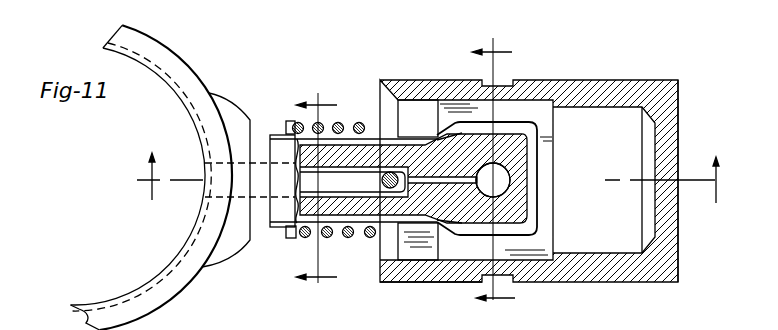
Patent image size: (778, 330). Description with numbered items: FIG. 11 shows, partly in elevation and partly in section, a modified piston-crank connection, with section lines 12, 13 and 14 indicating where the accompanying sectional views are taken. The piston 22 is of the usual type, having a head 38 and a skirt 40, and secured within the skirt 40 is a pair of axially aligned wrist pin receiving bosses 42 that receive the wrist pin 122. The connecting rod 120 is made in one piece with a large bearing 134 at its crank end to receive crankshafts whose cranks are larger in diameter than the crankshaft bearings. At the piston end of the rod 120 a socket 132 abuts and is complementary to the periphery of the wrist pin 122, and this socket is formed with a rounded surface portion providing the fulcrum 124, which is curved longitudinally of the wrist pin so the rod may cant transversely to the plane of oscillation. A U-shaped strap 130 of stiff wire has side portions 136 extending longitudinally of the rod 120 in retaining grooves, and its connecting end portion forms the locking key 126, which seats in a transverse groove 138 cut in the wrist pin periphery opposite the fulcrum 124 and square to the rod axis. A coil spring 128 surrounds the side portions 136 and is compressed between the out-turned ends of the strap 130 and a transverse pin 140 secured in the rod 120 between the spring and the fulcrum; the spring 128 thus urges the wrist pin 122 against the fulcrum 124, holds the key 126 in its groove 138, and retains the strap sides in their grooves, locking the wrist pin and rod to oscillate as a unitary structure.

The section line 12- 12 is at (425, 178).
The section line 13- 13 is at (493, 173).
The section line 14- 14 is at (316, 189).
The piston 22 is at (435, 77).
The head 38 is at (674, 217).
The skirt 40 is at (406, 280).
The wrist pin receiving bosses 42 is at (545, 128).
The connecting rod 120 is at (277, 138).
The wrist pin 122 is at (503, 140).
The fulcrum 124 is at (448, 229).
The locking key 126 is at (547, 163).
The spring 128 is at (295, 190).
The strap 130 is at (360, 223).
The socket 132 is at (438, 118).
The bearing 134 is at (152, 284).
The side portions 136 is at (389, 138).
The groove 138 is at (547, 192).
The transverse pin 140 is at (382, 181).